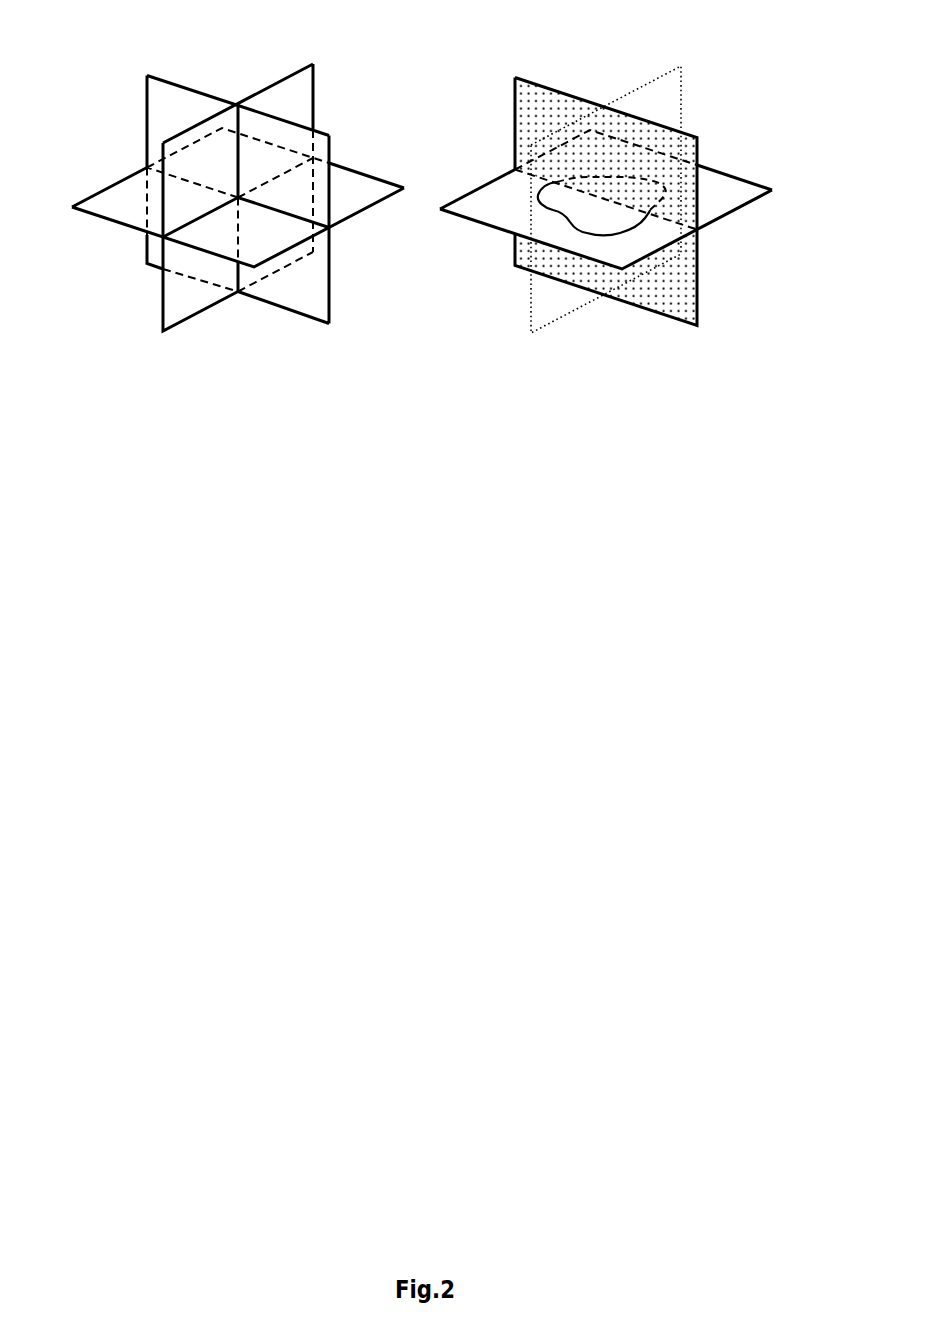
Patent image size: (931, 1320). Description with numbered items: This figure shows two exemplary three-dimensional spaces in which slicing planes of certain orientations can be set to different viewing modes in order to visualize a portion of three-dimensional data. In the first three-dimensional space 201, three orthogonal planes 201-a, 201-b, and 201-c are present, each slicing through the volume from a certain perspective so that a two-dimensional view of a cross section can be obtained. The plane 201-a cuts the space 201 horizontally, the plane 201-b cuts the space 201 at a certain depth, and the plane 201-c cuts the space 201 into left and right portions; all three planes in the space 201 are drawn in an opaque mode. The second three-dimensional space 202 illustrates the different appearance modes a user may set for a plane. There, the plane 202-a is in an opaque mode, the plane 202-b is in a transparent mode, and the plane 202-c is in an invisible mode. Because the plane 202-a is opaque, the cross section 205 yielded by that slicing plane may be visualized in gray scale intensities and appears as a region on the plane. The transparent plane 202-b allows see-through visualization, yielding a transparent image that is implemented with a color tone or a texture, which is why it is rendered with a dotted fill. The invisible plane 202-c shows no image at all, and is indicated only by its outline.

The 3D space 201 is at (130, 252).
The plane 201-a is at (366, 176).
The plane 201-b is at (337, 252).
The plane 201-c is at (270, 85).
The 3D space 202 is at (717, 243).
The plane 202-a is at (733, 173).
The plane 202-b is at (698, 287).
The plane 202-c is at (643, 83).
The cross section 205 is at (563, 215).